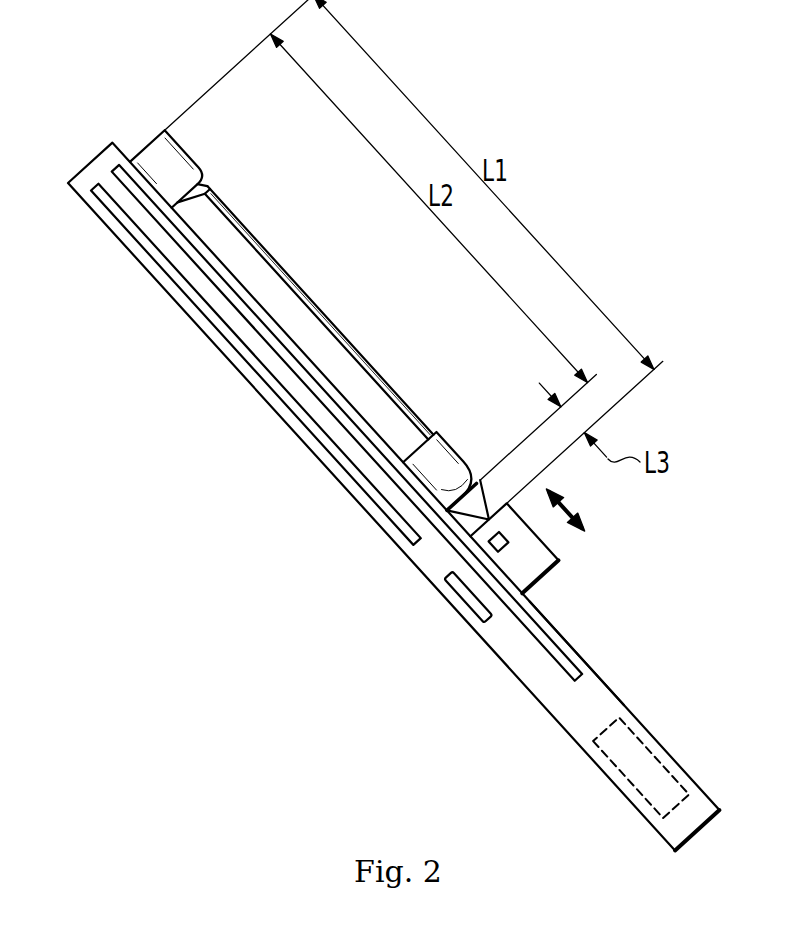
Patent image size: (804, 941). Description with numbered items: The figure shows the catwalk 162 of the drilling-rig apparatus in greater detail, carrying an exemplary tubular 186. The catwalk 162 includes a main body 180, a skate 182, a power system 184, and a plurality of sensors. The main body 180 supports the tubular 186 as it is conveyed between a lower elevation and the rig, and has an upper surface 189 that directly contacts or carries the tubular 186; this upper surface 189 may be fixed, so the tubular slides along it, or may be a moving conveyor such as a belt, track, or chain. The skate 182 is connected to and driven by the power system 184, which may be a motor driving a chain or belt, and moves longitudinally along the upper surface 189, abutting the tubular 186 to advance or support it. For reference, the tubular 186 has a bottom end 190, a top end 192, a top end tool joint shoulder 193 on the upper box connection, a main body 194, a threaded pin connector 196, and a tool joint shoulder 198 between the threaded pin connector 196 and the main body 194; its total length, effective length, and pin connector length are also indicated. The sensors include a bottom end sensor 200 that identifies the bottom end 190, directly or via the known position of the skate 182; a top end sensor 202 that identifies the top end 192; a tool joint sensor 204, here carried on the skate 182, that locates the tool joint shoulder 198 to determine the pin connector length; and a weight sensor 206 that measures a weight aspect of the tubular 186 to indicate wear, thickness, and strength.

The catwalk 162 is at (206, 492).
The main body 180 is at (553, 712).
The skate 182 is at (548, 545).
The power system 184 is at (660, 757).
The tubular 186 is at (304, 339).
The upper surface 189 is at (603, 680).
The bottom end 190 is at (463, 563).
The top end 192 is at (143, 142).
The top end tool joint shoulder 193 is at (200, 197).
The main body 194 is at (255, 236).
The threaded pin connector 196 is at (445, 513).
The tool joint shoulder 198 is at (462, 465).
The bottom end sensor 200 is at (527, 620).
The top end sensor 202 is at (130, 240).
The tool joint sensor 204 is at (507, 547).
The weight sensor 206 is at (456, 600).